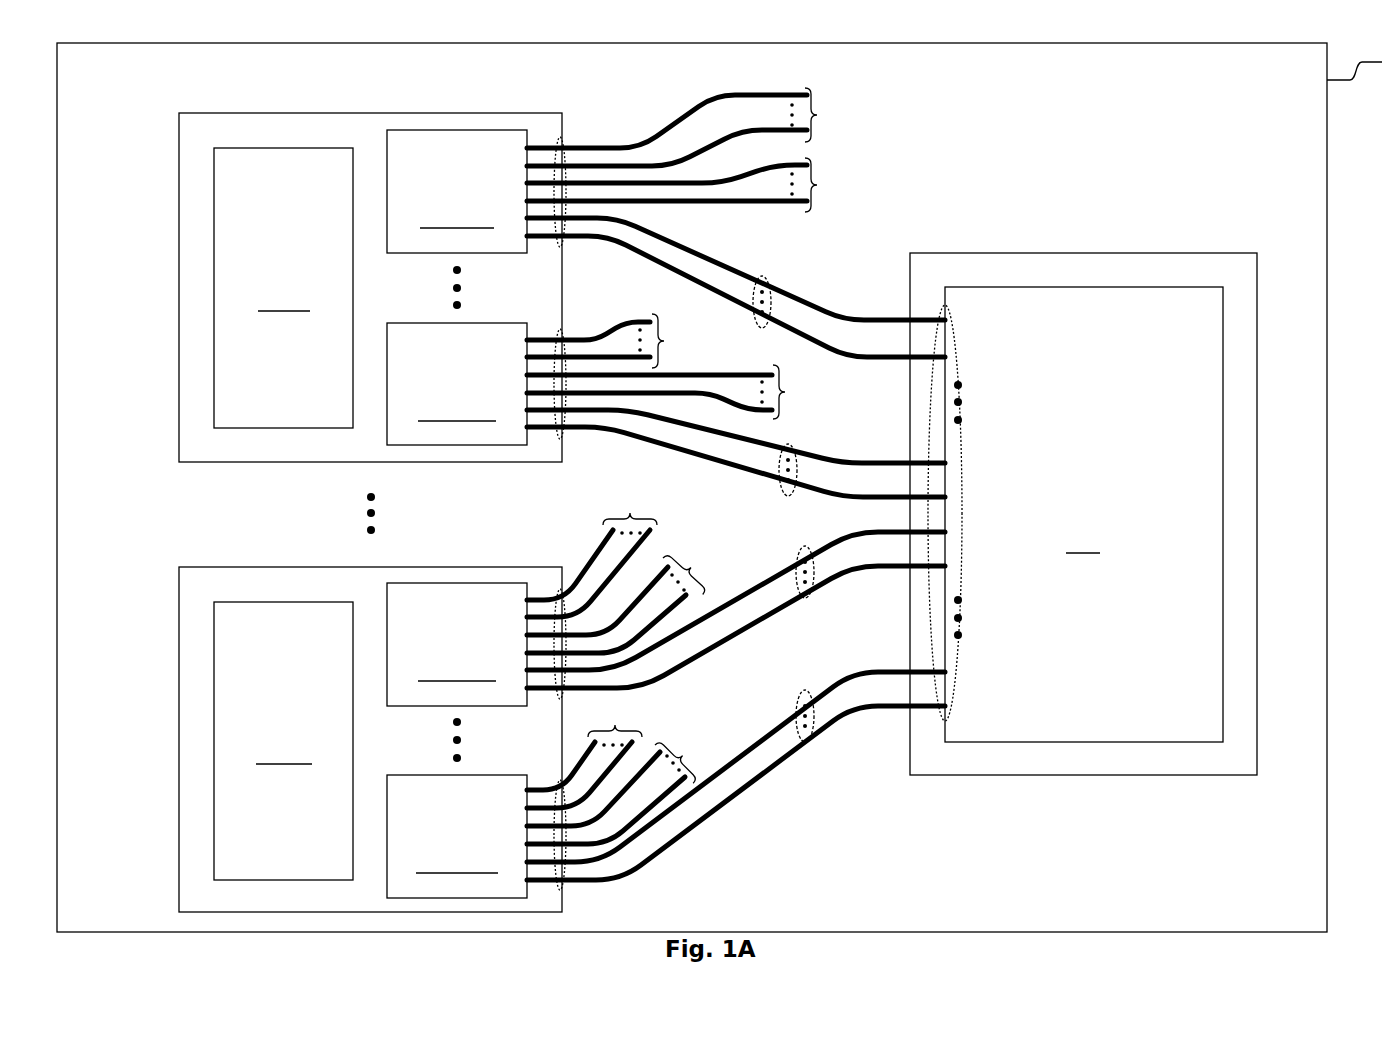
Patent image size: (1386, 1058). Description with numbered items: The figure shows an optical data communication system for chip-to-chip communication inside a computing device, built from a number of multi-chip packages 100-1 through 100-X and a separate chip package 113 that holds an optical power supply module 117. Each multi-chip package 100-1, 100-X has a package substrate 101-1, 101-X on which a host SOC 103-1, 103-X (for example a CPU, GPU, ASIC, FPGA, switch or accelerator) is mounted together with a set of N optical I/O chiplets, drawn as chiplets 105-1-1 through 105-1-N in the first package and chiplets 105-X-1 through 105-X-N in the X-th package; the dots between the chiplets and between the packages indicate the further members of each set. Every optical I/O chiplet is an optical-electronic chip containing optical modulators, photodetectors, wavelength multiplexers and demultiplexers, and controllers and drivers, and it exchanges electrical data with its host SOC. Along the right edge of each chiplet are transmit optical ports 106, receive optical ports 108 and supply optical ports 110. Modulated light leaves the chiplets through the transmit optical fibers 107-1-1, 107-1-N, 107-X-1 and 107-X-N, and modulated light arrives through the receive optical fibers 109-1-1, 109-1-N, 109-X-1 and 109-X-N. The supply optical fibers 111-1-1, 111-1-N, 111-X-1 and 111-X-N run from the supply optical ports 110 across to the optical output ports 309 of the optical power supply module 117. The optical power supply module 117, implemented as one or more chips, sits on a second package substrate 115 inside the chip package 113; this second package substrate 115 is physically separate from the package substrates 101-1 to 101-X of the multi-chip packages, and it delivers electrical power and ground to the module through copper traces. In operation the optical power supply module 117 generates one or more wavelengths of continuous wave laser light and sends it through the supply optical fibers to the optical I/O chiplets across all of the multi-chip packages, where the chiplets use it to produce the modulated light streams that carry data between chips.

The multi-chip package 100-1 is at (194, 101).
The multi-chip package 100-X is at (194, 554).
The package substrate 101-1 is at (354, 130).
The package substrate 101-X is at (319, 583).
The host system-on-chip (SOC) 103-1 is at (283, 288).
The host system-on-chip (SOC) 103-X is at (283, 741).
The optical I/O chiplet 105-1-1 is at (457, 191).
The optical I/O chiplet 105-1-N is at (457, 384).
The optical I/O chiplet 105-X-1 is at (457, 644).
The optical I/O chiplet 105-X-N is at (457, 836).
The transmit optical port 106 is at (546, 156).
The transmit optical fibers 107-1-1 is at (705, 127).
The transmit optical fibers 107-1-N is at (628, 341).
The transmit optical fibers 107-X-1 is at (592, 558).
The transmit optical fibers 107-X-N is at (584, 760).
The receive optical port 108 is at (567, 192).
The receive optical fibers 109-1-1 is at (705, 185).
The receive optical fibers 109-1-N is at (688, 392).
The receive optical fibers 109-X-1 is at (630, 601).
The receive optical fibers 109-X-N is at (631, 790).
The supply optical port 110 is at (585, 227).
The supply optical fibers 111-1-1 is at (768, 273).
The supply optical fibers 111-1-N is at (795, 443).
The supply optical fibers 111-X-1 is at (802, 548).
The supply optical fibers 111-X-N is at (801, 692).
The chip package 113 is at (1246, 240).
The second package substrate 115 is at (1085, 270).
The optical power supply module 117 is at (1084, 514).
The optical output ports 309 is at (953, 330).